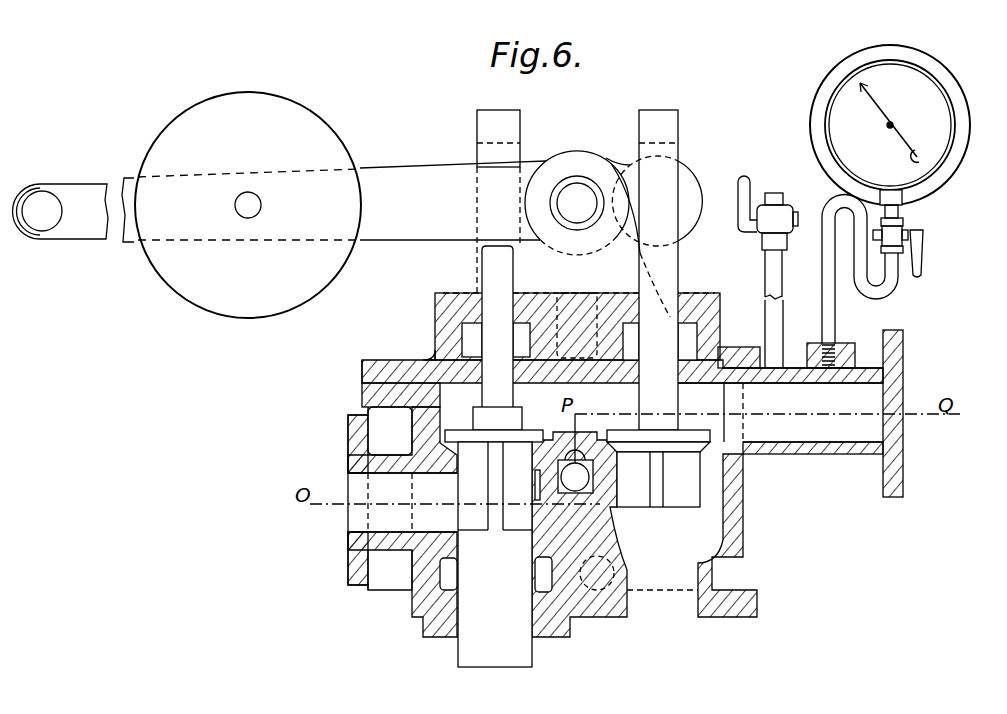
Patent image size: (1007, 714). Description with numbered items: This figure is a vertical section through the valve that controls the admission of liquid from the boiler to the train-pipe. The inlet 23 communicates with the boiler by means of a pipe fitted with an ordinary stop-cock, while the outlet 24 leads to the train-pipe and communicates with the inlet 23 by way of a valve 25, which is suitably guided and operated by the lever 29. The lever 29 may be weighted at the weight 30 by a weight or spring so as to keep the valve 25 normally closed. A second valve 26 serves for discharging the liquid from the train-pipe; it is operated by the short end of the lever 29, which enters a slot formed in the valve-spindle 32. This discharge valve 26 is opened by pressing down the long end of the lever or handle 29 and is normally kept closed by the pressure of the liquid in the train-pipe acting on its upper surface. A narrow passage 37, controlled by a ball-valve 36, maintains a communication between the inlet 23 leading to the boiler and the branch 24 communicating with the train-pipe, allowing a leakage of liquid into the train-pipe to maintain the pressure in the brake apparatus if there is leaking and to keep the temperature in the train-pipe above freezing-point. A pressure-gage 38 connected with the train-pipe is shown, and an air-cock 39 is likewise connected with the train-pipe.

The inlet 23 is at (402, 498).
The outlet 24 is at (771, 413).
The valve 25 is at (494, 388).
The valve 26 is at (658, 474).
The lever 29 is at (531, 203).
The weight 30 is at (187, 205).
The valve-spindle 32 is at (658, 276).
The ball-valve 36 is at (575, 453).
The narrow passage 37 is at (577, 495).
The pressure-gage 38 is at (890, 205).
The air-cock 39 is at (768, 269).